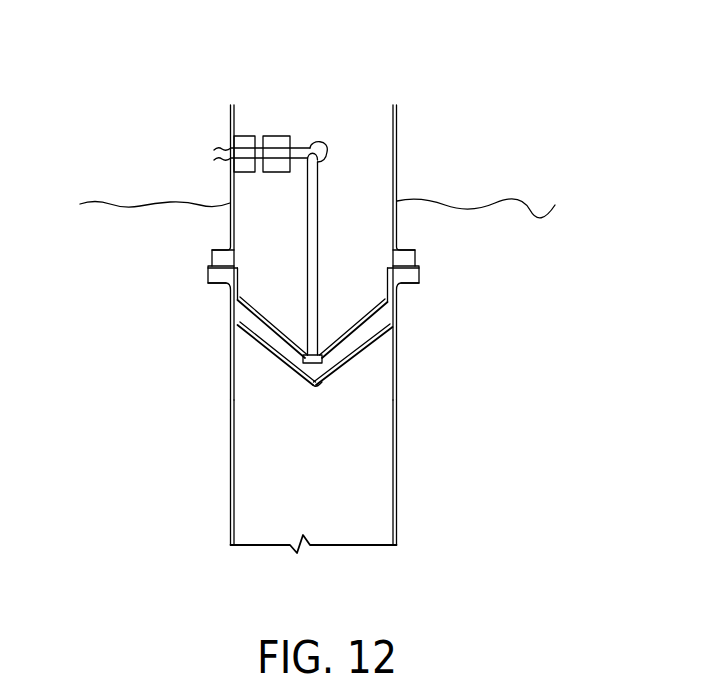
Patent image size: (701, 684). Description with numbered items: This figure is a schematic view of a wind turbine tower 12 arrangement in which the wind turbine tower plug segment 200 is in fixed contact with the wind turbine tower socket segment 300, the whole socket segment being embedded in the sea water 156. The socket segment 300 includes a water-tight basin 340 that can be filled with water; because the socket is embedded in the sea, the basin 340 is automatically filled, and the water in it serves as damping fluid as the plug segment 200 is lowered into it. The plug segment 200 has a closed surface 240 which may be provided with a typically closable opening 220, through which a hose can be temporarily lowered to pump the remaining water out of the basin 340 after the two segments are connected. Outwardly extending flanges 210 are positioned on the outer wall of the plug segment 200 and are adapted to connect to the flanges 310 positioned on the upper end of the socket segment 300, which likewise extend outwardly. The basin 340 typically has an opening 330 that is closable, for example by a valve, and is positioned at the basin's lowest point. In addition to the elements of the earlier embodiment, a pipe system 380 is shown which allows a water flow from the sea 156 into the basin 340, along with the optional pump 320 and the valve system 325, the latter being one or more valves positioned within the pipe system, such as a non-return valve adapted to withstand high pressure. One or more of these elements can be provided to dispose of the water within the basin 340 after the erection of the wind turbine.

The fluid handling assembly 12 is at (141, 97).
The sea water 156 is at (104, 301).
The wind turbine tower plug segment 200 is at (379, 229).
The outwardly extending flanges 210 is at (227, 250).
The opening 220 is at (320, 352).
The closed surface 240 is at (357, 323).
The wind turbine tower socket segment 300 is at (353, 512).
The flanges 310 is at (207, 278).
The pump 320 is at (240, 173).
The valve system 325 is at (277, 173).
The opening 330 is at (313, 380).
The basin 340 is at (363, 348).
The pipe system 380 is at (319, 143).